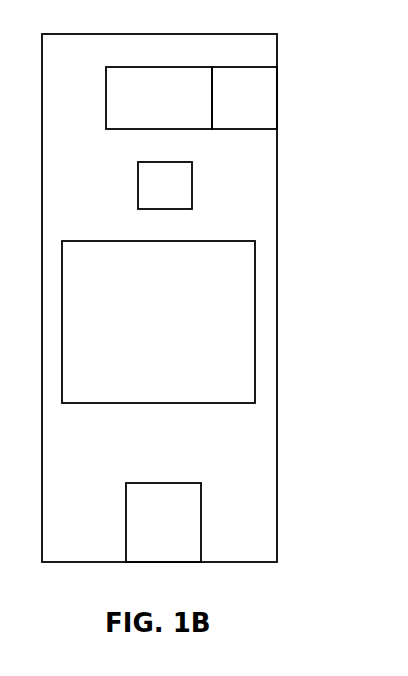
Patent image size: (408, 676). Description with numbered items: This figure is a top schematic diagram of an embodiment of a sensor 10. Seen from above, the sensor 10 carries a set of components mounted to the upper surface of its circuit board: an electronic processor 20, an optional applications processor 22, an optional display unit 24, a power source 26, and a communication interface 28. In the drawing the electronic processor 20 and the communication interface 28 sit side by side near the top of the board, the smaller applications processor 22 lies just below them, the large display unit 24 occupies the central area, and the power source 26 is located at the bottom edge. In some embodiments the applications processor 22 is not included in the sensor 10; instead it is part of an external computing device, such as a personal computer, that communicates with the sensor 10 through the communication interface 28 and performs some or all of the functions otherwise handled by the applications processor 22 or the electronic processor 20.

The sensor 10 is at (306, 130).
The electronic processor 20 is at (159, 98).
The applications processor 22 is at (165, 185).
The display unit 24 is at (158, 322).
The power source 26 is at (163, 522).
The communication interface 28 is at (244, 98).